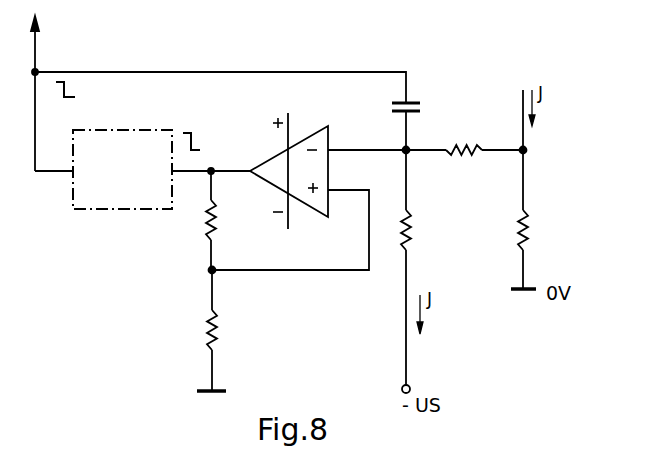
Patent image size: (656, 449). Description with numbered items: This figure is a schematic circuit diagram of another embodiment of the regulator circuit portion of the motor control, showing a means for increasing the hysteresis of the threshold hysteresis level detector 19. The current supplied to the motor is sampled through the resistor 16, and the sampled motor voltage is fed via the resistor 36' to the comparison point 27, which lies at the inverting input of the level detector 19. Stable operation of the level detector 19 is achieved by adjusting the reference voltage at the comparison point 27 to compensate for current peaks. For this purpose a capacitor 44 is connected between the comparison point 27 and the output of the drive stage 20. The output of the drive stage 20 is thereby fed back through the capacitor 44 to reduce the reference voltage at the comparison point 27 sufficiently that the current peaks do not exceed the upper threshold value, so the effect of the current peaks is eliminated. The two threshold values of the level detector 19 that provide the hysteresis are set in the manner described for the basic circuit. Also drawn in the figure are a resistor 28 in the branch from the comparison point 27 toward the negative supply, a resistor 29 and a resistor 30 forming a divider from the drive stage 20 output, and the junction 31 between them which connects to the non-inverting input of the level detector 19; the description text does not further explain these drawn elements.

The drive stage 20 is at (122, 169).
The level detector 19 is at (328, 168).
The resistor 29 is at (216, 223).
The junction node 31 is at (212, 270).
The resistor 30 is at (217, 329).
The capacitor 44 is at (413, 101).
The comparison point 27 is at (407, 149).
The resistor 36' is at (464, 131).
The resistor 28 is at (411, 232).
The resistor 16 is at (528, 232).